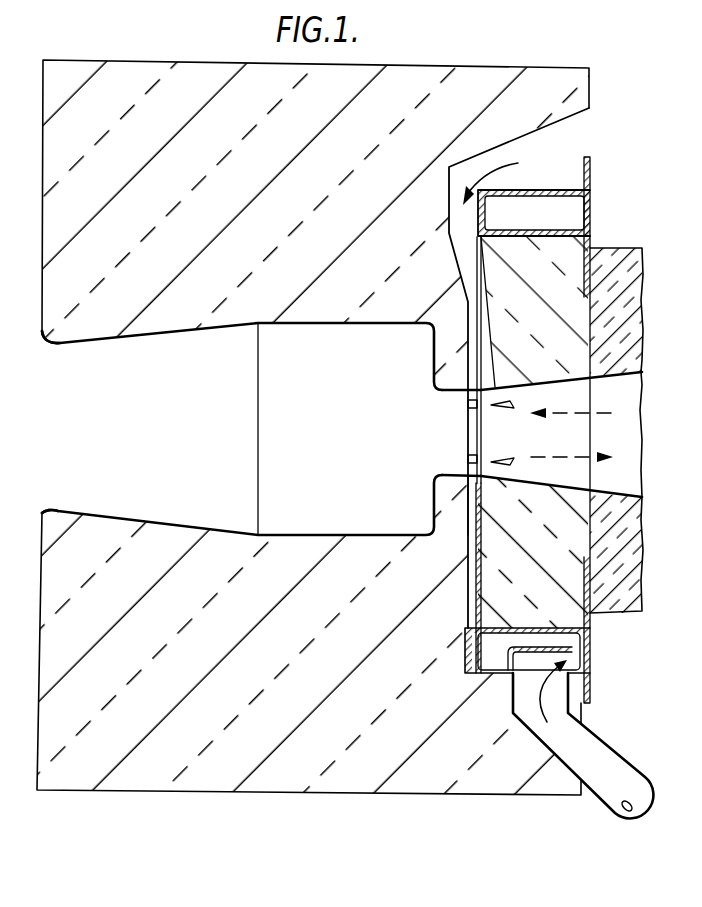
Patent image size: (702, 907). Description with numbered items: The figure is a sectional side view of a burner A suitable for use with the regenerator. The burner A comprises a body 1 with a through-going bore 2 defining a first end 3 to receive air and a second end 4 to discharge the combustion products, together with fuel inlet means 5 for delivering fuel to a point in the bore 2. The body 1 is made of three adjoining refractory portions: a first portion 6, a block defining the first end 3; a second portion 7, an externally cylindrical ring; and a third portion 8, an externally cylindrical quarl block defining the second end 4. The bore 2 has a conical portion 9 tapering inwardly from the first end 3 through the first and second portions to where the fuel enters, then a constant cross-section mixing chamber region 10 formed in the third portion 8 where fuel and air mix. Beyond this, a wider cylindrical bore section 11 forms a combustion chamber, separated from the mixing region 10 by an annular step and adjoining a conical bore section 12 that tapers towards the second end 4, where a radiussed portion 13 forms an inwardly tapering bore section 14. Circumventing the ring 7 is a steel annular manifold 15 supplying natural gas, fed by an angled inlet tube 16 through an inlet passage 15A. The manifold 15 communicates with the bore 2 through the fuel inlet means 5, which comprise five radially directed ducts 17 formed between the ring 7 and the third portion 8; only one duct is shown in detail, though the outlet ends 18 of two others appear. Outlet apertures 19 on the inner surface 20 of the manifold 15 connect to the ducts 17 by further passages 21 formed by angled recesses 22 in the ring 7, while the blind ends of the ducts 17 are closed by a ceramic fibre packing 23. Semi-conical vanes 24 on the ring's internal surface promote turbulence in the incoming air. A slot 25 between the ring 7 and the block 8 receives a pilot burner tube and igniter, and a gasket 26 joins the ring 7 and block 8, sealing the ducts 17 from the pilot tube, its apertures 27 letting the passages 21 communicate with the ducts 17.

The body 1 is at (332, 429).
The through-going bore 2 is at (325, 522).
The first end 3 is at (635, 383).
The second end 4 is at (43, 390).
The fuel inlet means 5 is at (467, 547).
The first portion 6 is at (623, 253).
The second portion 7 is at (550, 240).
The third portion 8 is at (132, 68).
The conical portion 9 is at (607, 446).
The mixing chamber region 10 is at (451, 427).
The cylindrical bore section 11 is at (308, 443).
The conical bore section 12 is at (146, 441).
The radiussed portion 13 is at (47, 513).
The inwardly tapering bore section 14 is at (43, 427).
The annular manifold 15 is at (587, 665).
The inlet passage 15A is at (543, 667).
The angled inlet tube 16 is at (587, 738).
The ducts 17 is at (471, 525).
The outlet ends 18 is at (468, 404).
The outlet apertures 19 is at (497, 628).
The inner surface 20 is at (532, 628).
The further passages 21 is at (482, 615).
The recesses 22 is at (478, 596).
The ceramic fibre packing 23 is at (465, 663).
The semi-conical vanes 24 is at (511, 462).
The slot 25 is at (484, 180).
The gasket 26 is at (472, 573).
The apertures 27 is at (478, 607).
The burner A is at (313, 410).